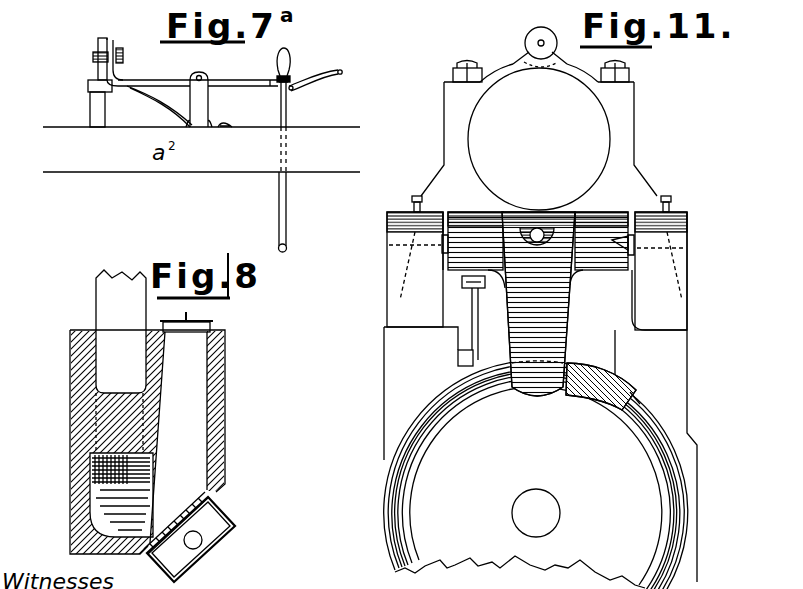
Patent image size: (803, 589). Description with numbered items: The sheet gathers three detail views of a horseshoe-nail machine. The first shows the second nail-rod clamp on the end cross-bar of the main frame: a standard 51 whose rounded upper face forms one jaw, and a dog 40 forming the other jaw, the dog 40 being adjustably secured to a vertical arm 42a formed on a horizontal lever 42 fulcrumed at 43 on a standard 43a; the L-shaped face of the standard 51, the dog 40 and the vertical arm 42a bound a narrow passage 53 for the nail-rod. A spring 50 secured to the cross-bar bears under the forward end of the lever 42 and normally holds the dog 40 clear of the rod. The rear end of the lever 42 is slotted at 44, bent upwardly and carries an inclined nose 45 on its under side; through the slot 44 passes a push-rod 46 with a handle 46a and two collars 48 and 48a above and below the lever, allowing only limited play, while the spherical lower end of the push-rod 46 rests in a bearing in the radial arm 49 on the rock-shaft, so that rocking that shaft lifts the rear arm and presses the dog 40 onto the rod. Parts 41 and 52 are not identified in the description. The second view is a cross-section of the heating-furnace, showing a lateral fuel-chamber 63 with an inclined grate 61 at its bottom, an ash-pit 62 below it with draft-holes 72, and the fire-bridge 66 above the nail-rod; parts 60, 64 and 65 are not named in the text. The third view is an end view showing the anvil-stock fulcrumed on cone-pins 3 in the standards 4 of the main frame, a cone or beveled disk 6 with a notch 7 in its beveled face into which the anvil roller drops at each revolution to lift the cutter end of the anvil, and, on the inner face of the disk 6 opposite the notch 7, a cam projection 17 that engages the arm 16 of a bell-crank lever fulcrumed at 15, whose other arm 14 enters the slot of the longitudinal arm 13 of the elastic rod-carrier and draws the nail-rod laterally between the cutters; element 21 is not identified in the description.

In FIG. 7A, the dog 40 is at (98, 42).
In FIG. 7A, the nut 41 is at (124, 58).
In FIG. 7A, the horizontal lever 42 is at (170, 77).
In FIG. 7A, the vertical arm 42a is at (116, 45).
In FIG. 7A, the fulcrum 43 is at (207, 83).
In FIG. 7A, the standard 43a is at (228, 109).
In FIG. 7A, the slot 44 is at (308, 82).
In FIG. 7A, the inclined projection or nose 45 is at (296, 90).
In FIG. 7A, the push-rod 46 is at (288, 122).
In FIG. 7A, the handle 46a is at (291, 63).
In FIG. 7A, the collar 48 is at (272, 88).
In FIG. 7A, the collar 48a is at (278, 82).
In FIG. 7A, the lever or radial arm 49 is at (277, 79).
In FIG. 7A, the spring 50 is at (170, 100).
In FIG. 7A, the standard 51 is at (95, 88).
In FIG. 7A, the nut 52 is at (98, 76).
In FIG. 7A, the narrow passage 53 is at (98, 82).
In FIG. 8, the block 60 is at (225, 409).
In FIG. 8, the inclined grate 61 is at (176, 523).
In FIG. 8, the ash-pit 62 is at (191, 539).
In FIG. 8, the lateral fuel-chamber 63 is at (178, 437).
In FIG. 8, the cap 64 is at (212, 323).
In FIG. 8, the grid 65 is at (121, 474).
In FIG. 8, the partition or fire-bridge 66 is at (121, 483).
In FIG. 8, the draft-holes 72 is at (194, 540).
In FIG. 11, the cone-pins 3 is at (445, 212).
In FIG. 11, the standards 4 is at (537, 271).
In FIG. 11, the cone or beveled disk 6 is at (528, 487).
In FIG. 11, the notch or recess 7 is at (588, 392).
In FIG. 11, the longitudinal arm 13 is at (482, 290).
In FIG. 11, the arm of bell-crank lever 14 is at (479, 334).
In FIG. 11, the fulcrum 15 is at (475, 363).
In FIG. 11, the arm of bell-crank lever 16 is at (536, 475).
In FIG. 11, the cam projection 17 is at (622, 410).
In FIG. 11, the piston stem 21 is at (538, 304).